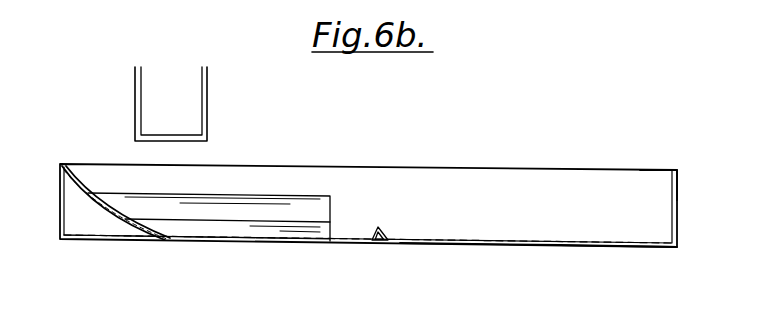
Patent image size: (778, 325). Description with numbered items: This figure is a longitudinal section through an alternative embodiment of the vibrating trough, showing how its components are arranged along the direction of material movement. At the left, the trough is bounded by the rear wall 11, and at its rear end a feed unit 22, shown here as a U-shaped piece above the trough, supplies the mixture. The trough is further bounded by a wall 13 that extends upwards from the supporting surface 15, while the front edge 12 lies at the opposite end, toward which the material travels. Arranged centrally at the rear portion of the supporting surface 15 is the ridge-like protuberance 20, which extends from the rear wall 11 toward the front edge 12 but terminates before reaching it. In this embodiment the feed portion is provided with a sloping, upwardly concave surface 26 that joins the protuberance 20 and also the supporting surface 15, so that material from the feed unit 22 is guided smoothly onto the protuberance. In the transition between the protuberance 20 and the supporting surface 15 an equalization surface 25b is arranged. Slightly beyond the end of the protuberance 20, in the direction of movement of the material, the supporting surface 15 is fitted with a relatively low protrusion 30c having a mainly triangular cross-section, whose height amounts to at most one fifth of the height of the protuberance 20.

The rear wall 11 is at (60, 199).
The front edge 12 is at (622, 247).
The wall 13 is at (660, 180).
The supporting surface 15 is at (538, 242).
The protuberance 20 is at (277, 200).
The feed unit 22 is at (207, 105).
The equalization surface 25b is at (301, 228).
The upwardly concave surface 26 is at (84, 186).
The protrusion 30c is at (380, 228).